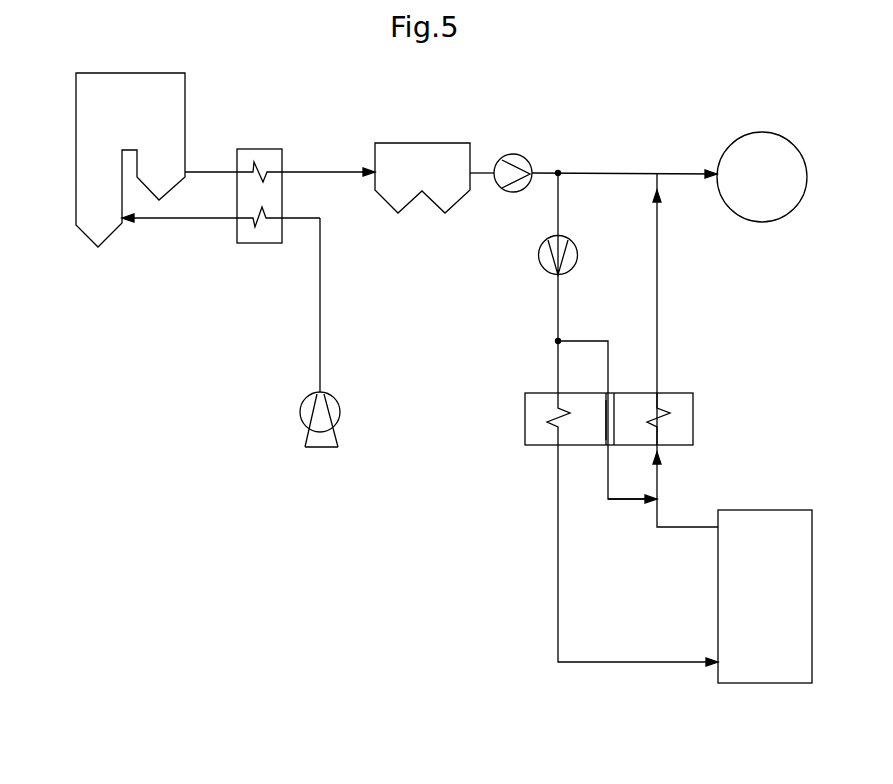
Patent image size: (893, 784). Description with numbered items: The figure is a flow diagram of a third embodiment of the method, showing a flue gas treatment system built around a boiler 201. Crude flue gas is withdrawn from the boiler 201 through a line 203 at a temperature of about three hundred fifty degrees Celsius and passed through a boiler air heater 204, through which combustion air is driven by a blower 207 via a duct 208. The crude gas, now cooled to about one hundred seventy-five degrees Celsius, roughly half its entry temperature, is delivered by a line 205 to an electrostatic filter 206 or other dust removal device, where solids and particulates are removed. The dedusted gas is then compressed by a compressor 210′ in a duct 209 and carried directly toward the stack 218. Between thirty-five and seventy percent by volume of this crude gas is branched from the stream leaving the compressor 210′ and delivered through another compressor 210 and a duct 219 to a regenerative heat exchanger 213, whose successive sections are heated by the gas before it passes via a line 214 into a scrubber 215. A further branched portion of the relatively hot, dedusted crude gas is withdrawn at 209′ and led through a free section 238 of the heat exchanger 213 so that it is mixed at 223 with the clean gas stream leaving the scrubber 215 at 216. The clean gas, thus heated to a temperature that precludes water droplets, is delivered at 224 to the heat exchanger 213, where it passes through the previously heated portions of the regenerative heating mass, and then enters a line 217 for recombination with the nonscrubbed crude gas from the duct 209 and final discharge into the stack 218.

The boiler 201 is at (185, 99).
The line 203 is at (203, 170).
The boiler air heater 204 is at (268, 148).
The line 205 is at (315, 170).
The electrostatic filter 206 is at (425, 142).
The blower 207 is at (338, 402).
The duct 208 is at (321, 283).
The duct 209 is at (558, 202).
The branch withdrawal point 209′ is at (583, 341).
The compressor 210 is at (577, 256).
The compressor 210′ is at (512, 156).
The regenerative heat exchanger 213 is at (525, 420).
The line 214 is at (558, 564).
The scrubber 215 is at (745, 673).
The clean gas outlet line 216 is at (680, 527).
The line 217 is at (657, 330).
The stack 218 is at (722, 152).
The duct 219 is at (558, 317).
The mixing point 223 is at (627, 500).
The line 224 is at (659, 469).
The free section 238 is at (605, 418).